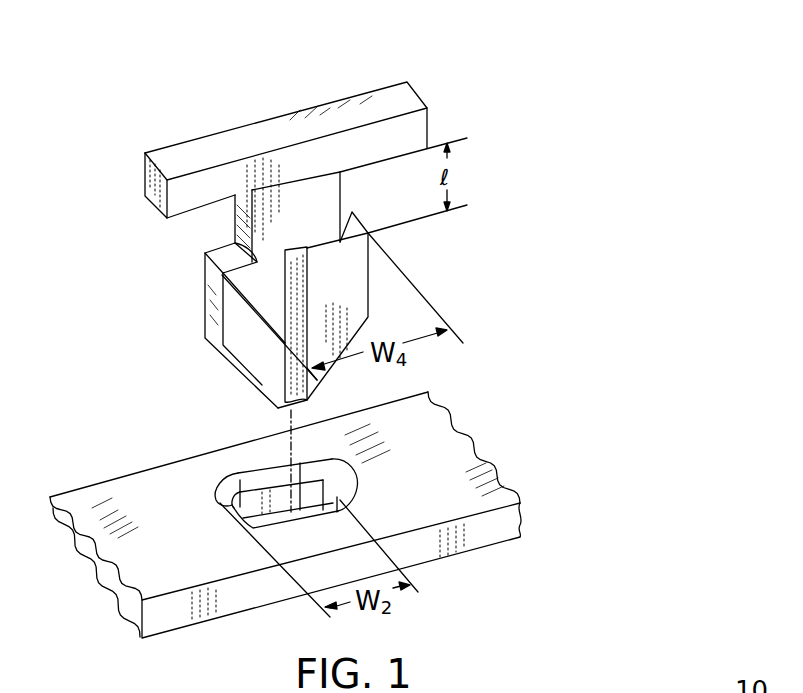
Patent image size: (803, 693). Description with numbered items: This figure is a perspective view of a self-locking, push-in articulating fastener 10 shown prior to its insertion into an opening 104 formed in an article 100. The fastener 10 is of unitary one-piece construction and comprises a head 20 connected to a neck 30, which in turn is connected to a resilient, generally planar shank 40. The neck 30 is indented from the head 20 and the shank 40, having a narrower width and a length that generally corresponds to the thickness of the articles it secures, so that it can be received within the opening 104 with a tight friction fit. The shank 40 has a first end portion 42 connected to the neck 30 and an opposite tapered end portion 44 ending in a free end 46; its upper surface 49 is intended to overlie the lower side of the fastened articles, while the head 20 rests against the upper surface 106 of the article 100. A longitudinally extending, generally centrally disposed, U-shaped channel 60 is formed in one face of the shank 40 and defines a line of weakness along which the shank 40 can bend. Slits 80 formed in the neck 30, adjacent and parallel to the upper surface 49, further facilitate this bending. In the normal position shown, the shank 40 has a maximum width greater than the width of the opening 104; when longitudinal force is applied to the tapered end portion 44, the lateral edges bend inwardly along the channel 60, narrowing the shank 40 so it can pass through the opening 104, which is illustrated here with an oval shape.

The fastener 10 is at (126, 152).
The head 20 is at (386, 92).
The neck 30 is at (330, 197).
The shank 40 is at (228, 344).
The first end portion 42 is at (358, 272).
The tapered end portion 44 is at (323, 370).
The free end 46 is at (277, 408).
The upper surface of shank 49 is at (222, 258).
The U-shaped channel 60 is at (282, 362).
The slits 80 is at (323, 245).
The article 100 is at (478, 540).
The opening 104 is at (253, 493).
The upper surface of article 106 is at (177, 549).